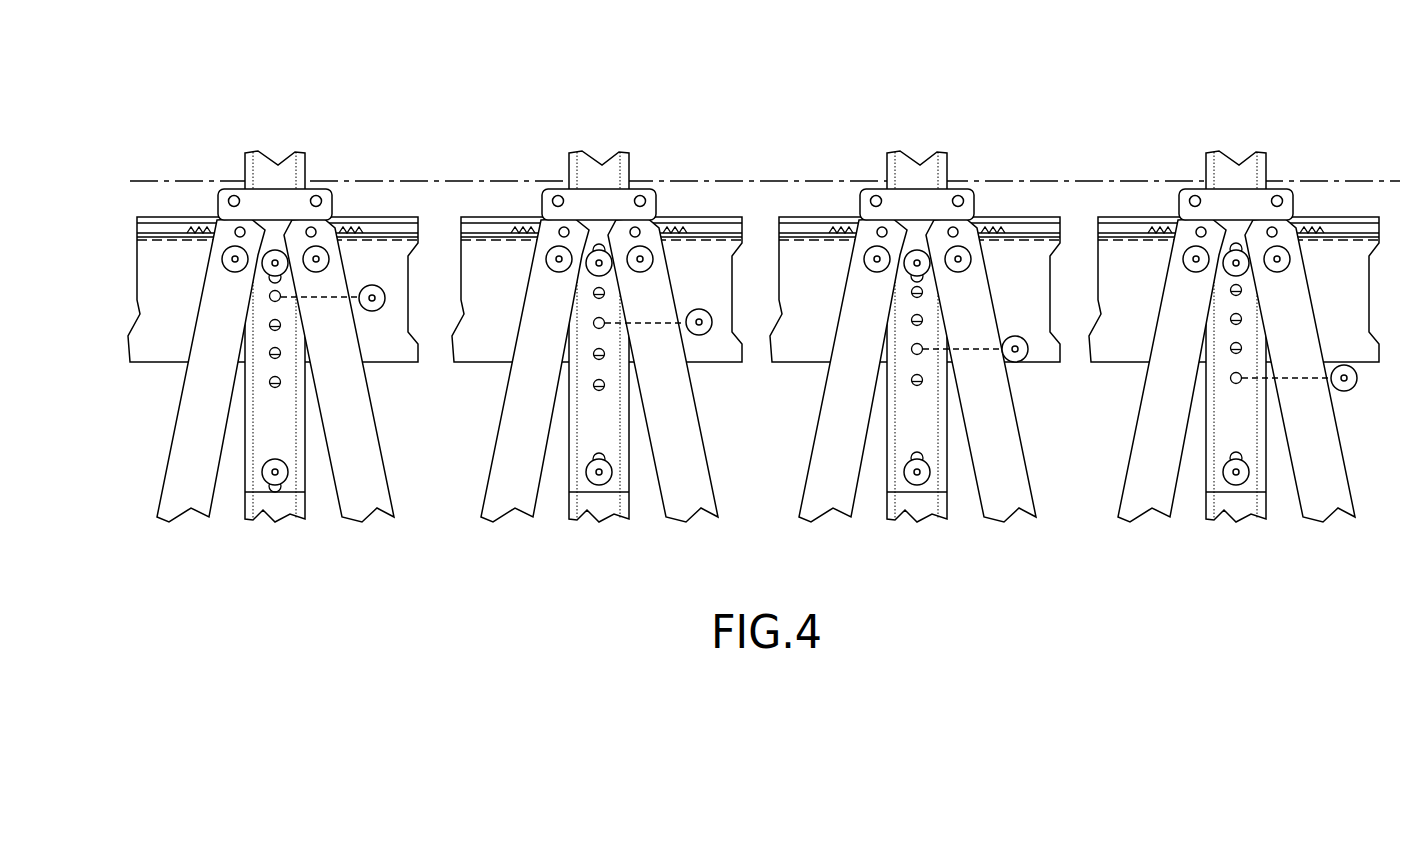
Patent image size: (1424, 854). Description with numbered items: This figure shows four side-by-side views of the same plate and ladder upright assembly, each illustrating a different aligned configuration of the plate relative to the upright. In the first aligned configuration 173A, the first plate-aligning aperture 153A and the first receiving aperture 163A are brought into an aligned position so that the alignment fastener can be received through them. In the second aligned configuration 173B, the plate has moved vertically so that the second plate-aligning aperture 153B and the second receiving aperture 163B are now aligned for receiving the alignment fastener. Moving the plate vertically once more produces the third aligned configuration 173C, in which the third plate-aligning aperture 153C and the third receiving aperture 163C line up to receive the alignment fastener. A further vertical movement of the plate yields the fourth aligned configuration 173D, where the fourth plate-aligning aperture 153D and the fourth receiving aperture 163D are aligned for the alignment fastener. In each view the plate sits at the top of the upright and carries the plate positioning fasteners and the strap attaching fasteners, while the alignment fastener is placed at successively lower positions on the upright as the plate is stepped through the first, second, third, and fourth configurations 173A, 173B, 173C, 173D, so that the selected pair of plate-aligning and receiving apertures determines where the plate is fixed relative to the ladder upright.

The first aligned configuration 173A is at (258, 340).
The second aligned configuration 173B is at (630, 307).
The third aligned configuration 173C is at (937, 307).
The fourth aligned configuration 173D is at (1264, 308).
The first plate-aligning aperture 153A is at (203, 340).
The first receiving aperture 163A is at (271, 303).
The second plate-aligning aperture 153B is at (686, 389).
The second receiving aperture 163B is at (604, 328).
The third plate-aligning aperture 153C is at (994, 351).
The third receiving aperture 163C is at (922, 352).
The fourth plate-aligning aperture 153D is at (1320, 373).
The fourth receiving aperture 163D is at (1242, 379).